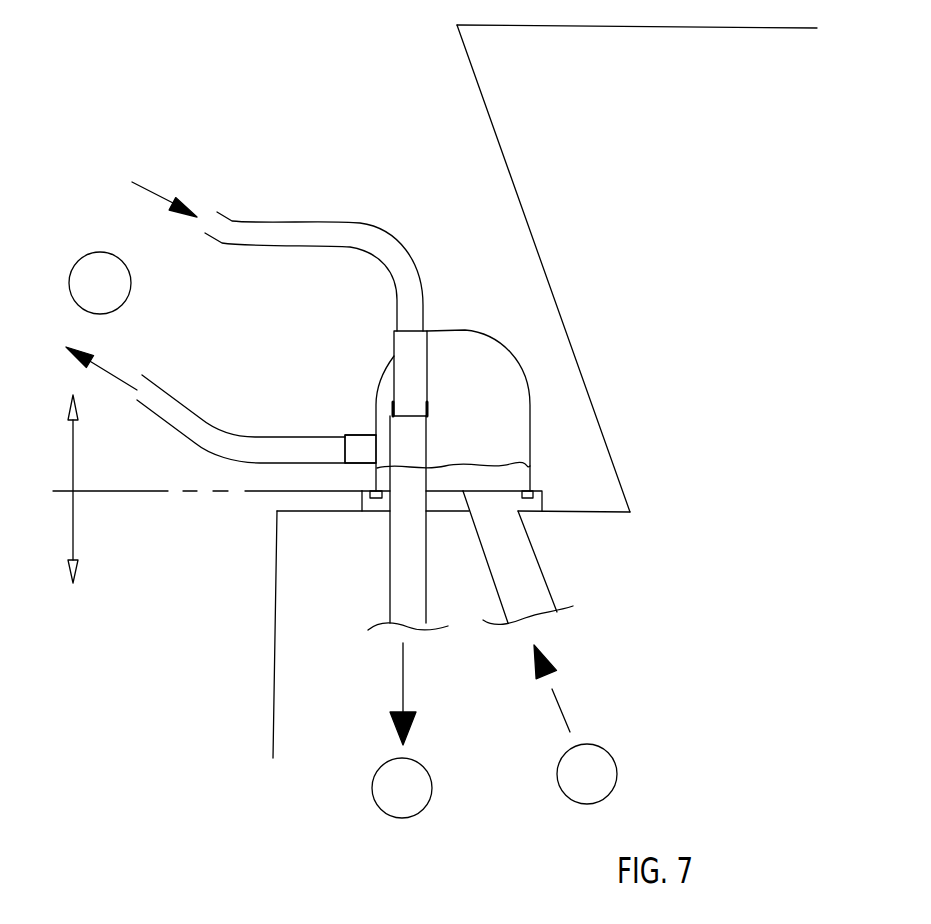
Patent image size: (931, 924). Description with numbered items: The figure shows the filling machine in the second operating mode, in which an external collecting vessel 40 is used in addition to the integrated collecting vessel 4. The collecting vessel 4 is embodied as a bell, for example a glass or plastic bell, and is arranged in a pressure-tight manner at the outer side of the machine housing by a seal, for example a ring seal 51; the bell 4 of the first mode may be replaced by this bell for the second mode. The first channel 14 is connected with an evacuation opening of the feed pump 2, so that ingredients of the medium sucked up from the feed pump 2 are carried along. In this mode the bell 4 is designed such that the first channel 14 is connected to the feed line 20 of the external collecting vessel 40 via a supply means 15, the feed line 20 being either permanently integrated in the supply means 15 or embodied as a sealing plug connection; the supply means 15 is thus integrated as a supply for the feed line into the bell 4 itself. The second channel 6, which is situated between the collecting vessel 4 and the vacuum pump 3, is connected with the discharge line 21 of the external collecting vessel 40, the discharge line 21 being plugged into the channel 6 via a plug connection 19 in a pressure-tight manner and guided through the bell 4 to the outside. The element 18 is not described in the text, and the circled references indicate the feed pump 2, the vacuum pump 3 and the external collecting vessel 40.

The feed pump 2 is at (575, 724).
The vacuum pump 3 is at (402, 730).
The collecting vessel 4 is at (465, 330).
The second channel 6 is at (389, 596).
The first channel 14 is at (520, 550).
The supply means 15 is at (349, 418).
The mounting plate 18 is at (350, 465).
The plug connection 19 is at (394, 340).
The feed line 20 is at (213, 425).
The discharge line 21 is at (305, 220).
The external collecting vessel 40 is at (100, 283).
The ring seal 51 is at (535, 490).